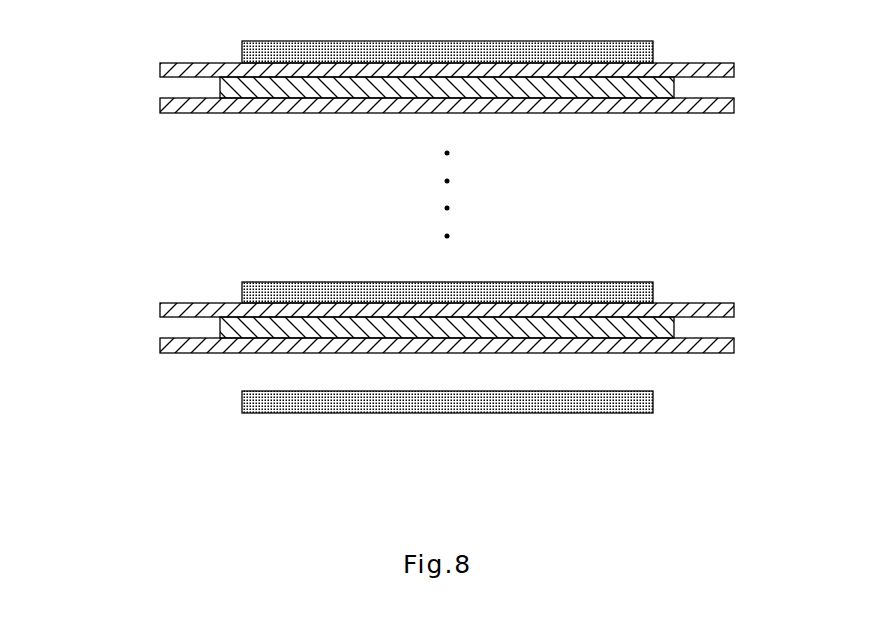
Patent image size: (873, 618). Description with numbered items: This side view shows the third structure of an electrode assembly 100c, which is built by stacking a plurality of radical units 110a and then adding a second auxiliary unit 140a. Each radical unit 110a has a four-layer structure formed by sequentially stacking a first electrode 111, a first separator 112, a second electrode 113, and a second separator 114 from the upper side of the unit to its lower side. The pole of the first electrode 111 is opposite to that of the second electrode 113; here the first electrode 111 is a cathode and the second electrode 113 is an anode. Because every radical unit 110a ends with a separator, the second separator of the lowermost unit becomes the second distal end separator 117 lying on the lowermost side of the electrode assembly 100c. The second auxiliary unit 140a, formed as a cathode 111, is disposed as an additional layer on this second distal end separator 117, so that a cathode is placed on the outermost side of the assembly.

The electrode assembly 100c is at (427, 232).
The radical unit 110a is at (375, 232).
The first electrode 111 is at (370, 232).
The first separator 112 is at (160, 71).
The second electrode 113 is at (220, 88).
The second separator 114 is at (411, 108).
The second distal end separator 117 is at (160, 347).
The second auxiliary unit 140a is at (389, 414).